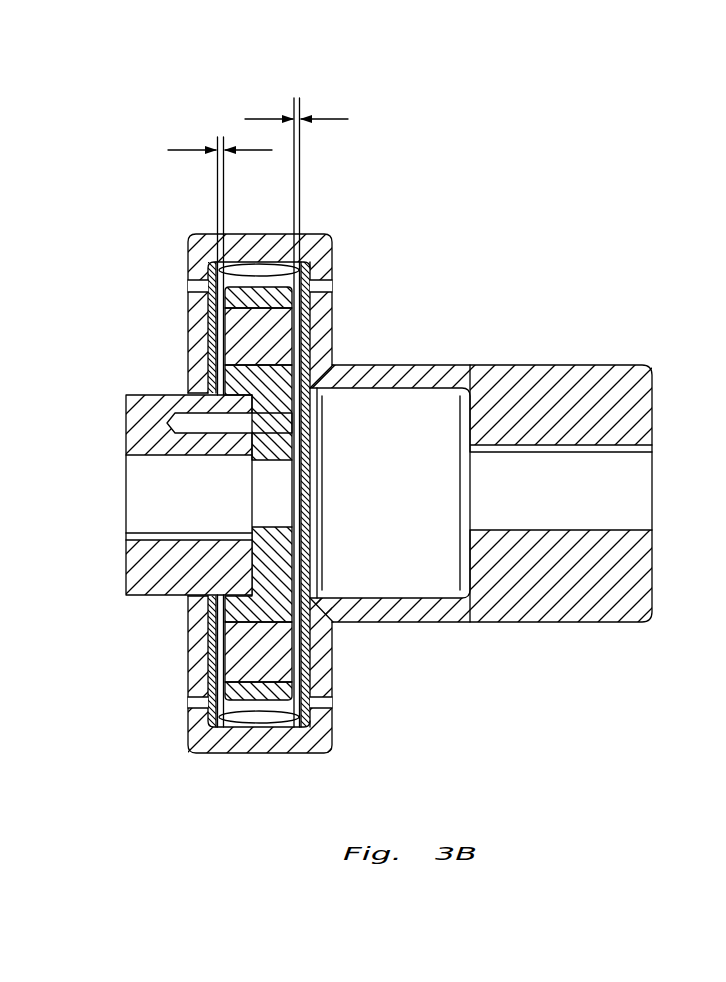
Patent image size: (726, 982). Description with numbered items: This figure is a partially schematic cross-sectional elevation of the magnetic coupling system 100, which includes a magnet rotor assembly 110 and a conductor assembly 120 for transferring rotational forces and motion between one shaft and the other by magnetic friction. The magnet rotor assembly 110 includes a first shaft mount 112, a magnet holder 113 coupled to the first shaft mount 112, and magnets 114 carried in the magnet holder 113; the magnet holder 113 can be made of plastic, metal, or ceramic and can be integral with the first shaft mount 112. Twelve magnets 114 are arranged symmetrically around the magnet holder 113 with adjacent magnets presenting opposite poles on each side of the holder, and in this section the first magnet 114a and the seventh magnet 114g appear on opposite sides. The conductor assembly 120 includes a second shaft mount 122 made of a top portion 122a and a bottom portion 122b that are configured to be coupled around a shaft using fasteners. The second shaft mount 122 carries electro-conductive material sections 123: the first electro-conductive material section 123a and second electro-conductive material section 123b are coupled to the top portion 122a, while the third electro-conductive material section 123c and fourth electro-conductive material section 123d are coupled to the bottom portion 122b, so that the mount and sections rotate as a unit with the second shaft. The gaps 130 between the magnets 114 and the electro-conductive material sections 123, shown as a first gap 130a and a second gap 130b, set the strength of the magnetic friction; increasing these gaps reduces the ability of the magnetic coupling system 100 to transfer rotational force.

The magnetic coupling system 100 is at (542, 140).
The magnet rotor assembly 110 is at (87, 523).
The first shaft mount 112 is at (127, 408).
The magnet holder 113 is at (232, 613).
The magnets 114 is at (178, 268).
The first magnet 114a is at (218, 645).
The seventh magnet 114g is at (228, 332).
The conductor assembly 120 is at (372, 352).
The second shaft mount 122 is at (630, 318).
The top portion 122a is at (500, 385).
The bottom portion 122b is at (558, 615).
The electro-conductive material sections 123 is at (393, 253).
The first electro-conductive material section 123a is at (212, 347).
The second electro-conductive material section 123b is at (318, 318).
The third electro-conductive material section 123c is at (232, 662).
The fourth electro-conductive material section 123d is at (305, 670).
The gaps 130 is at (245, 85).
The first gap 130a is at (220, 133).
The second gap 130b is at (296, 98).